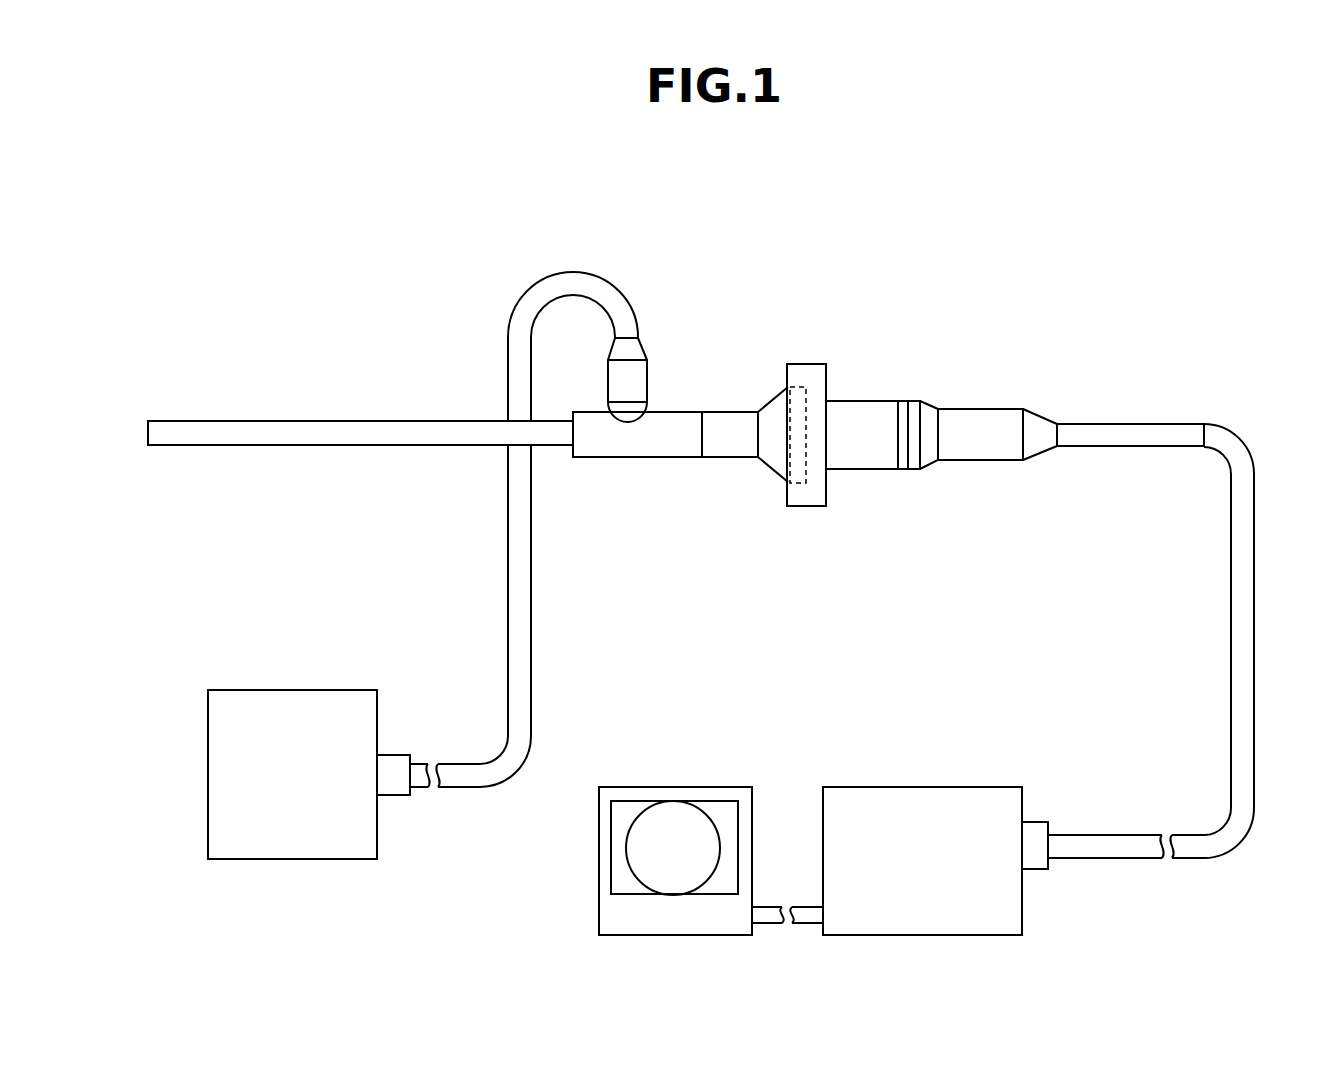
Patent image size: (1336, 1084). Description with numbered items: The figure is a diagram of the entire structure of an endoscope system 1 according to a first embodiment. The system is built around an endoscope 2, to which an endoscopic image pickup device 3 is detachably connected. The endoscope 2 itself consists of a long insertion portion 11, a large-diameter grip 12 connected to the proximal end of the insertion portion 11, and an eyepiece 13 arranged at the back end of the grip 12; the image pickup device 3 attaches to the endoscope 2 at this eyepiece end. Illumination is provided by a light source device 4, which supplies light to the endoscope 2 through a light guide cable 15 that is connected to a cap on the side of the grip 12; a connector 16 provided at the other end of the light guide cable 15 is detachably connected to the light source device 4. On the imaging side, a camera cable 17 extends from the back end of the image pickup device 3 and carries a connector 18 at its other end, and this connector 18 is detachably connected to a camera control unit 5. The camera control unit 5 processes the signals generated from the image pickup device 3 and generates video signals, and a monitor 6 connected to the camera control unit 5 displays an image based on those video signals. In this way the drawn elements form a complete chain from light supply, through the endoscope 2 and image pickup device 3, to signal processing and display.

The endoscope system 1 is at (576, 236).
The endoscope 2 is at (667, 346).
The endoscopic image pickup device 3 is at (927, 346).
The light source device 4 is at (292, 690).
The camera control unit 5 is at (922, 787).
The monitor 6 is at (673, 787).
The insertion portion 11 is at (326, 428).
The grip 12 is at (645, 453).
The eyepiece 13 is at (772, 408).
The light guide cable 15 is at (512, 542).
The connector 16 is at (395, 788).
The camera cable 17 is at (1236, 640).
The connector 18 is at (1035, 860).